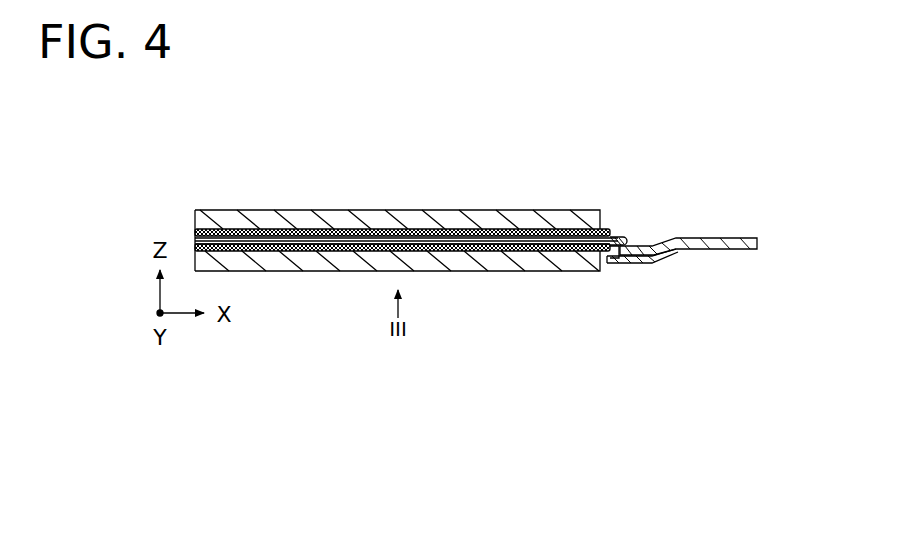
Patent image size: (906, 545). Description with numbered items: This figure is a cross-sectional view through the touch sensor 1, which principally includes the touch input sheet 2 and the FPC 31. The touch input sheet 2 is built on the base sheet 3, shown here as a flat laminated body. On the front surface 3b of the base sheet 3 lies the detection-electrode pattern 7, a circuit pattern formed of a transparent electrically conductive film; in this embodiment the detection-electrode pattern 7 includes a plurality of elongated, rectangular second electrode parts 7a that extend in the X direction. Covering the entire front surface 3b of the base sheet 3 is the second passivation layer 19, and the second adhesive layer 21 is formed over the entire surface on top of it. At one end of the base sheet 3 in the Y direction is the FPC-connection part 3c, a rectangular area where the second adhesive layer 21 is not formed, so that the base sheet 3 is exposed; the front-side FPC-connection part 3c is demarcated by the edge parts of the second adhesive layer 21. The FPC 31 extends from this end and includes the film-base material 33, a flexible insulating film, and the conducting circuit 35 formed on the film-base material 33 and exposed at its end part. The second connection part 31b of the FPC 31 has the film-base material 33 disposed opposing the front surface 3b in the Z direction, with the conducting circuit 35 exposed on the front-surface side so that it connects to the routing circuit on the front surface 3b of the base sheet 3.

The touch sensor 1 is at (482, 163).
The touch input sheet 2 is at (335, 188).
The base sheet 3 is at (408, 213).
The front surface 3b is at (458, 273).
The FPC-connection part 3c is at (625, 232).
The detection-electrode pattern 7 is at (266, 272).
The second electrode part 7a is at (338, 273).
The second passivation layer 19 is at (575, 272).
The second adhesive layer 21 is at (514, 273).
The FPC 31 is at (718, 207).
The second connection part 31b is at (640, 280).
The film-base material 33 is at (625, 271).
The conducting circuit 35 is at (640, 240).